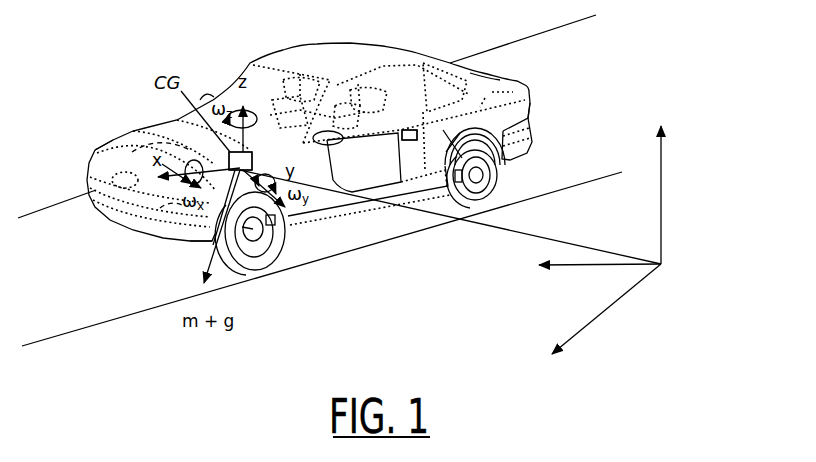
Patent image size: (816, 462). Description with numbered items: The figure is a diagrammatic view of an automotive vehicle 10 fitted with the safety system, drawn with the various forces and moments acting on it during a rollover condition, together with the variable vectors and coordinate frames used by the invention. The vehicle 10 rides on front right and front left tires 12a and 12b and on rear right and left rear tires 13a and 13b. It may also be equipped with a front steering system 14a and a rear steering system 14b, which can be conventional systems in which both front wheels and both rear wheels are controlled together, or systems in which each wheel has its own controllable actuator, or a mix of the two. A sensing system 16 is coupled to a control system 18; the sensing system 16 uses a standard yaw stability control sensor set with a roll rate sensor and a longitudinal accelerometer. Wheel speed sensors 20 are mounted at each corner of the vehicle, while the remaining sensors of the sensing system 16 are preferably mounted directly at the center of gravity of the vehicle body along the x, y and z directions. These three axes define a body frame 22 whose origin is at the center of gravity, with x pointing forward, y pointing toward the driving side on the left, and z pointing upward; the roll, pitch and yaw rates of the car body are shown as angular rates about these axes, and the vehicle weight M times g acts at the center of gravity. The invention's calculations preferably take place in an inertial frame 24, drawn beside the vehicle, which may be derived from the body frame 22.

The automotive vehicle 10 is at (333, 42).
The front right tire 12a is at (108, 140).
The front left tire 12b is at (268, 272).
The rear right tire 13a is at (500, 82).
The left rear tire 13b is at (497, 192).
The front steering system 14a is at (213, 240).
The rear steering system 14b is at (528, 118).
The sensing system 16 is at (246, 168).
The control system 18 is at (393, 133).
The wheel speed sensors 20 is at (456, 177).
The body frame 22 is at (213, 167).
The inertial frame 24 is at (662, 266).